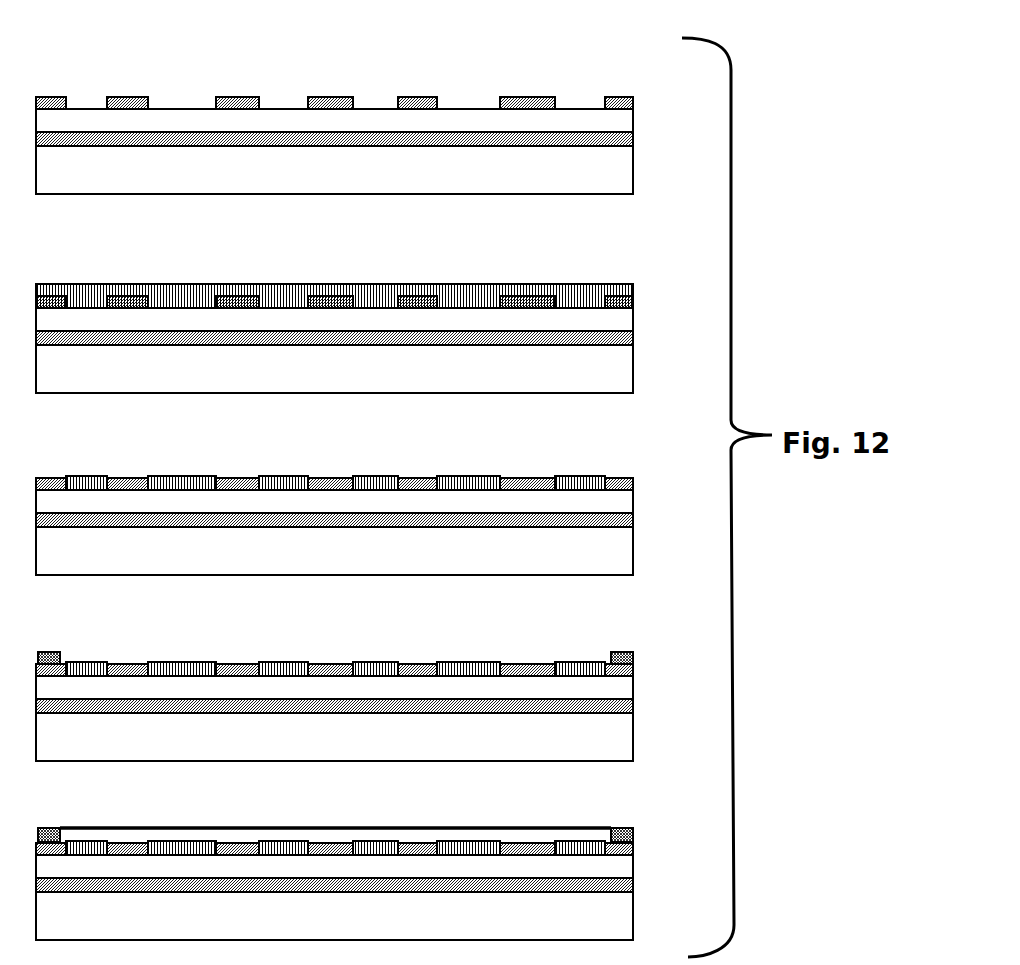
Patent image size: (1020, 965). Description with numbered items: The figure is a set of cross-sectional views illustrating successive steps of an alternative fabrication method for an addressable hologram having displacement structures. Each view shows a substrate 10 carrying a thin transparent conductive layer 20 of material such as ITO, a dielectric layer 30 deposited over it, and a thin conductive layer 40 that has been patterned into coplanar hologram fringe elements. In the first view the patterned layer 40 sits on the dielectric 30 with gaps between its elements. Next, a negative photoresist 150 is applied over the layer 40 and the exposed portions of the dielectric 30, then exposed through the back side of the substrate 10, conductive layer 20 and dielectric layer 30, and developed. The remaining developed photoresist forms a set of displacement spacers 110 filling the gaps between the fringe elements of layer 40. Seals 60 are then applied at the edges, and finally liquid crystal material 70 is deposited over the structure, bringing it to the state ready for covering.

The substrate 10 is at (647, 924).
The transparent conductive layer 20 is at (649, 883).
The dielectric layer 30 is at (647, 862).
The patterned conductive layer 40 is at (555, 98).
The seals 60 is at (625, 827).
The liquid crystal material 70 is at (145, 836).
The displacement spacers 110 is at (355, 477).
The negative photoresist layer 150 is at (287, 297).